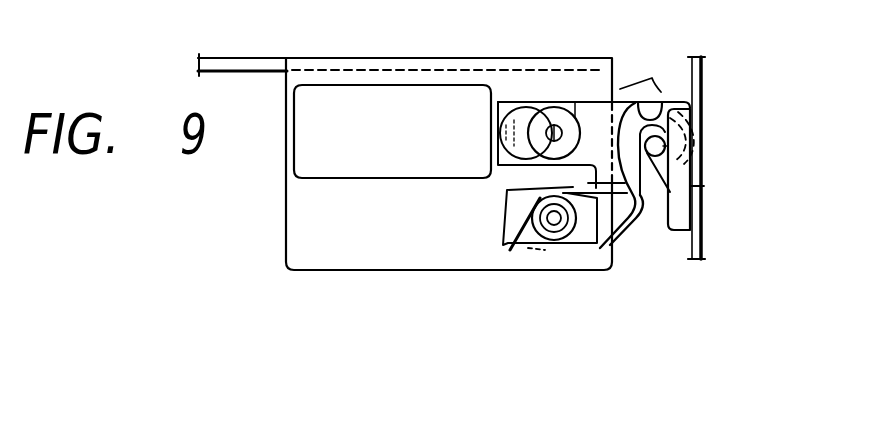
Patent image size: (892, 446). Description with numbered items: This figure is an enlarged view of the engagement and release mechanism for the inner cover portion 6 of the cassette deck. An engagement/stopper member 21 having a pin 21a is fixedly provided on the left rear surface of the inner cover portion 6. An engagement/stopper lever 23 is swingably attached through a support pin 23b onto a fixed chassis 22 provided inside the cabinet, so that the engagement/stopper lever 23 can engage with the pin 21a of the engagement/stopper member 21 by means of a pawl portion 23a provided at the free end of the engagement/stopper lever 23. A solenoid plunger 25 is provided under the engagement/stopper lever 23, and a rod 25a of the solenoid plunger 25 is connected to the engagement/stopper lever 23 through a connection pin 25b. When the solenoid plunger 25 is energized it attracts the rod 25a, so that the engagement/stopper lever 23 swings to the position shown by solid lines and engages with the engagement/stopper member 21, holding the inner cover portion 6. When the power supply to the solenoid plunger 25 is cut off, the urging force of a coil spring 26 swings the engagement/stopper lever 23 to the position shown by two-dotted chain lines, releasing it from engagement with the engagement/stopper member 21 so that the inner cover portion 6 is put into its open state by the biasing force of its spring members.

The inner cover portion 6 is at (705, 246).
The engagement/stopper member 21 is at (703, 190).
The pin 21a is at (706, 158).
The fixed chassis 22 is at (313, 78).
The engagement/stopper lever 23 is at (595, 115).
The pawl portion 23a is at (663, 92).
The support pin 23b is at (557, 228).
The solenoid plunger 25 is at (403, 98).
The rod 25a is at (530, 105).
The connection pin 25b is at (557, 105).
The coil spring 26 is at (532, 247).